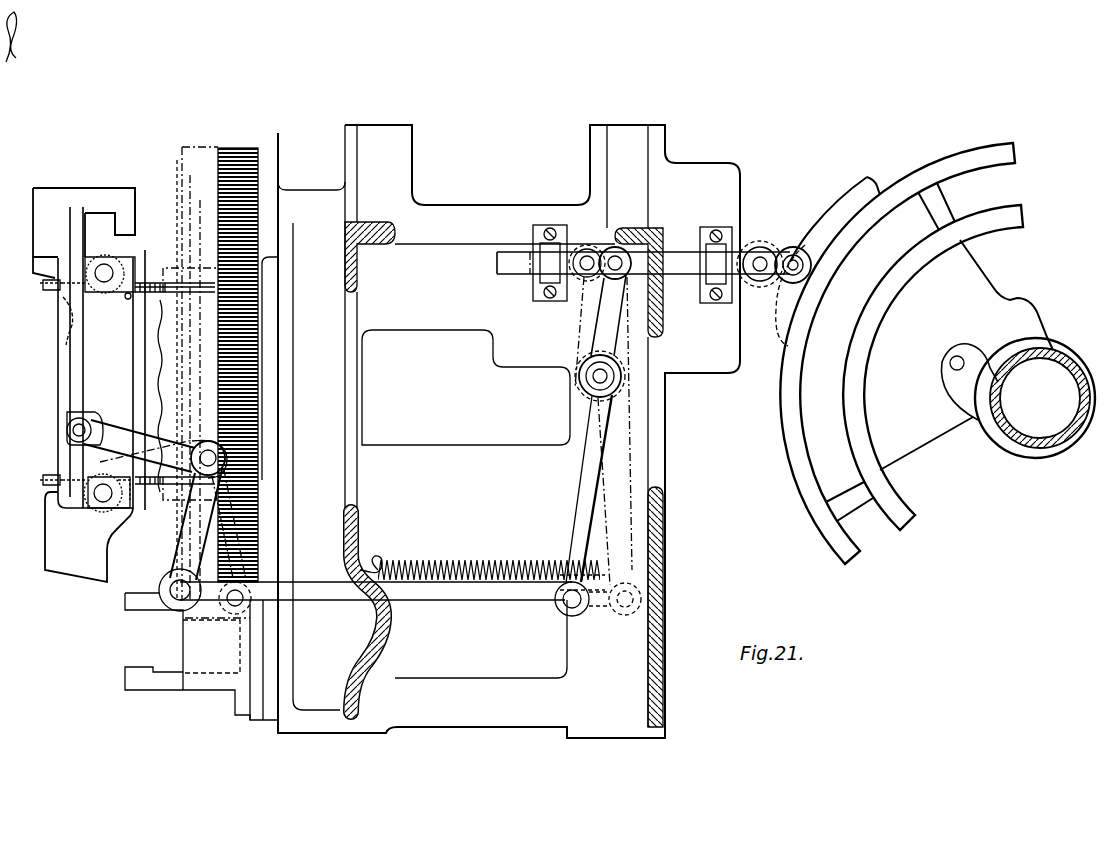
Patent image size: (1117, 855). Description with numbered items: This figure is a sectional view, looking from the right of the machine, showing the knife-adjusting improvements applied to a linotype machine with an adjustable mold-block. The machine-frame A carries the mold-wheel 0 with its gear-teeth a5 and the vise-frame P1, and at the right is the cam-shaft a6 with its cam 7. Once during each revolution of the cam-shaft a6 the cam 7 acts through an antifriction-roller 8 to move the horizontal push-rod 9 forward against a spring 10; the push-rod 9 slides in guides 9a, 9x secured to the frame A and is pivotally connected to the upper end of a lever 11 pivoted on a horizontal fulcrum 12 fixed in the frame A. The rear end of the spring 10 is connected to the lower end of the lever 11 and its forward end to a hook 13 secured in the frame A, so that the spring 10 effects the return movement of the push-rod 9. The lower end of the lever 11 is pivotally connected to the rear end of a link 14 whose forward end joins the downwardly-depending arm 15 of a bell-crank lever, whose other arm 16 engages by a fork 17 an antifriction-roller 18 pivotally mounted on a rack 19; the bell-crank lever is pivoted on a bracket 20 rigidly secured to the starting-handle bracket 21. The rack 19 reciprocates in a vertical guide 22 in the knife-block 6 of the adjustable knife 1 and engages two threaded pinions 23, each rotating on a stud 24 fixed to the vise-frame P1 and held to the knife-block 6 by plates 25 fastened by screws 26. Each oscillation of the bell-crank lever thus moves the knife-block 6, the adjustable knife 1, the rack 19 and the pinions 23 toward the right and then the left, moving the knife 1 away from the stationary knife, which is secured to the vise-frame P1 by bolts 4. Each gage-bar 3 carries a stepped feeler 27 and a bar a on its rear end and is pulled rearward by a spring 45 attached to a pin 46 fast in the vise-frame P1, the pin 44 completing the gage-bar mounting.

The machine-frame A is at (509, 431).
The mold-wheel 0 is at (232, 152).
The vise-frame P1 is at (103, 199).
The rack 19 is at (59, 233).
The adjustable knife 1 is at (122, 358).
The vertical guide 22 is at (58, 393).
The threaded pinion 23 is at (72, 520).
The stud 24 is at (104, 503).
The plate 25 is at (118, 512).
The screw 26 is at (122, 503).
The feeler 27 is at (147, 288).
The bar a is at (190, 382).
The guide a5 is at (271, 368).
The cam-shaft a6 is at (1035, 398).
The gage-bar 3 is at (55, 292).
The bolt 4 is at (40, 483).
The pin 44 is at (42, 285).
The spring 45 is at (56, 322).
The pin 46 is at (128, 300).
The knife-block 6 is at (78, 313).
The fork 17 is at (86, 420).
The antifriction-roller 18 is at (66, 430).
The arm of bell-crank lever 16 is at (139, 446).
The downwardly-depending arm 15 is at (208, 511).
The bracket 20 is at (218, 588).
The starting-handle bracket 21 is at (147, 608).
The link 14 is at (455, 600).
The spring 10 is at (474, 560).
The hook 13 is at (384, 562).
The lever 11 is at (598, 330).
The fulcrum 12 is at (580, 382).
The push-rod 9 is at (686, 278).
The guide 9a is at (550, 263).
The clamp 9x is at (716, 265).
The antifriction-roller 8 is at (793, 246).
The cam 7 is at (932, 152).